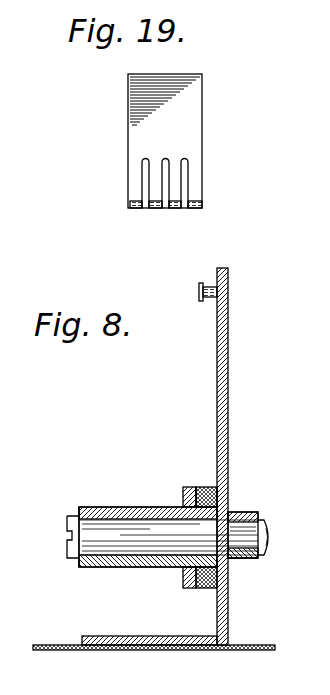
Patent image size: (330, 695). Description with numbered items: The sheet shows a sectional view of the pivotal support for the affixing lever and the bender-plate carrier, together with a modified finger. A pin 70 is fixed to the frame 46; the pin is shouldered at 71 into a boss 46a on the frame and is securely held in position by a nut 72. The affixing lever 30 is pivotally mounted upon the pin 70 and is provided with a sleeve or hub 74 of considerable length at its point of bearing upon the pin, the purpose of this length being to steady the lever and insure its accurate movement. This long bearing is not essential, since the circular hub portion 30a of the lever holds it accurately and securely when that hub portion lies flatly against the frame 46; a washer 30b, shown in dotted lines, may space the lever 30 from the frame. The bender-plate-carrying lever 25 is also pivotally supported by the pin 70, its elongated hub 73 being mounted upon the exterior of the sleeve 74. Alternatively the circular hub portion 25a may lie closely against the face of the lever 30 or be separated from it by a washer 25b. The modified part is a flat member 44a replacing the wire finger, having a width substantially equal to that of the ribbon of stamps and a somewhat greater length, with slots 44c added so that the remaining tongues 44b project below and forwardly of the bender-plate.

In FIG. 19, the flat finger member 44a is at (186, 128).
In FIG. 19, the tongues 44b is at (195, 210).
In FIG. 19, the slots 44c is at (185, 170).
In FIG. 8, the frame 46 is at (228, 351).
In FIG. 8, the boss 46a is at (235, 512).
In FIG. 8, the sleeve or hub 74 is at (131, 510).
In FIG. 8, the elongated hub 73 is at (99, 510).
In FIG. 8, the bender-plate-carrying lever 25 is at (184, 487).
In FIG. 8, the circular hub portion 25a is at (183, 580).
In FIG. 8, the washer 25b is at (192, 488).
In FIG. 8, the affixing lever 30 is at (200, 487).
In FIG. 8, the circular hub portion 30a is at (202, 590).
In FIG. 8, the washer 30b is at (212, 487).
In FIG. 8, the pin 70 is at (68, 540).
In FIG. 8, the shoulder 71 is at (238, 560).
In FIG. 8, the nut 72 is at (270, 530).